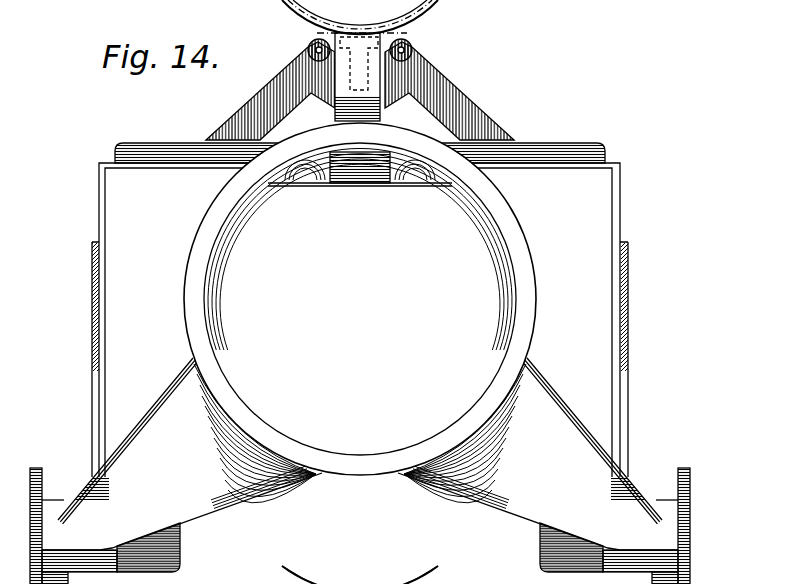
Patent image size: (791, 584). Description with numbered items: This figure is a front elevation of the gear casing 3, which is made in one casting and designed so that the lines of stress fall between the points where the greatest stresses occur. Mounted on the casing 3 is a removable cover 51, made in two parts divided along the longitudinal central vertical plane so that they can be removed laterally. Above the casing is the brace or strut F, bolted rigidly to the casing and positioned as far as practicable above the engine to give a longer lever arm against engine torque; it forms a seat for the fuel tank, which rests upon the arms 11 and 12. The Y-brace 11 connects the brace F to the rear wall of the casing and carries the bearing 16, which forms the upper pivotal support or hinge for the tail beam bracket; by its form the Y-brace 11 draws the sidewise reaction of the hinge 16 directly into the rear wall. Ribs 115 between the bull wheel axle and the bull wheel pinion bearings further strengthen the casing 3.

The gear casing 3 is at (360, 320).
The Y-brace 11 is at (440, 82).
The arm 12 is at (343, 88).
The bearing 16 is at (360, 573).
The removable cover 51 is at (530, 144).
The ribs 115 is at (360, 471).
The brace or strut F is at (357, 24).